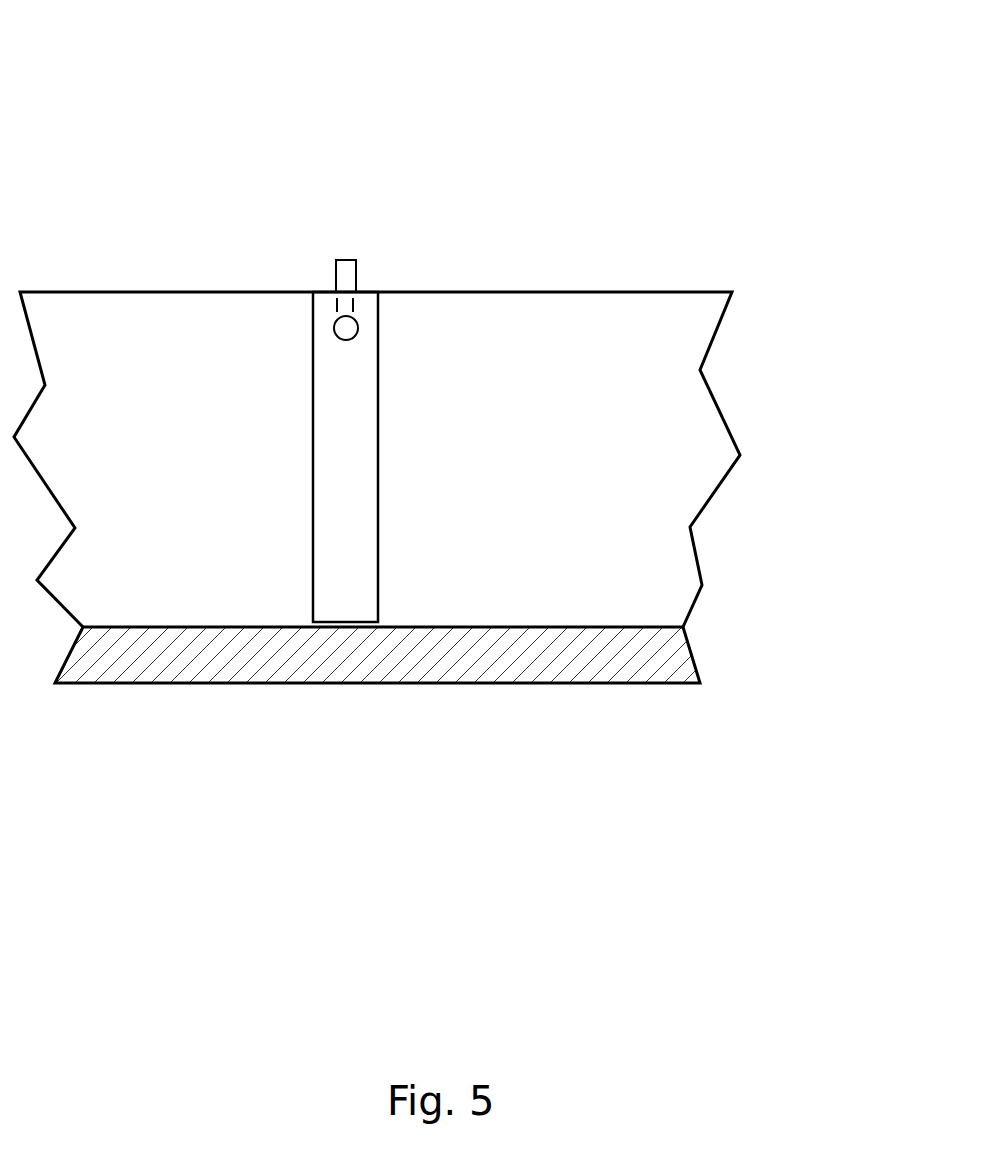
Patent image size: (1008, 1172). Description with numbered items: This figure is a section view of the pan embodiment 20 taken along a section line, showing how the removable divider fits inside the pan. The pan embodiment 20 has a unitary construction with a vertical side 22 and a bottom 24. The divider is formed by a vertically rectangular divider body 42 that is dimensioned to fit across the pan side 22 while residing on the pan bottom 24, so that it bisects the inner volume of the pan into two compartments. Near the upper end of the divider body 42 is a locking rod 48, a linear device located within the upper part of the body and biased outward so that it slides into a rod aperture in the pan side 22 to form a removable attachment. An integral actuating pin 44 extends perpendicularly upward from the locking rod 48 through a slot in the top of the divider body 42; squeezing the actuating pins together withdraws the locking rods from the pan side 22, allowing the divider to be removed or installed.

The pan embodiment 20 is at (629, 185).
The vertical side 22 is at (628, 352).
The bottom 24 is at (200, 660).
The divider body 42 is at (337, 368).
The actuating pin 44 is at (356, 260).
The locking rod 48 is at (355, 317).